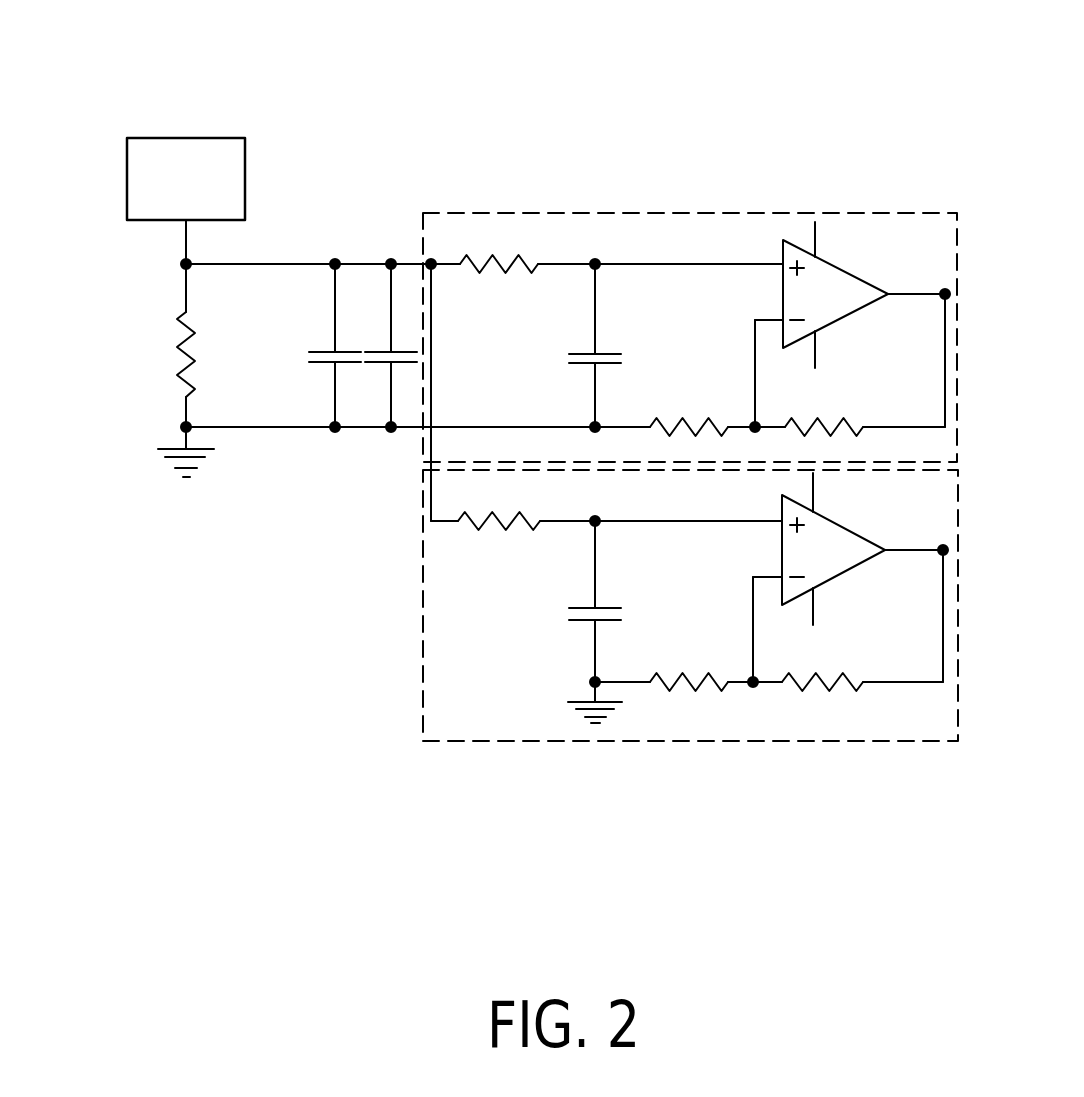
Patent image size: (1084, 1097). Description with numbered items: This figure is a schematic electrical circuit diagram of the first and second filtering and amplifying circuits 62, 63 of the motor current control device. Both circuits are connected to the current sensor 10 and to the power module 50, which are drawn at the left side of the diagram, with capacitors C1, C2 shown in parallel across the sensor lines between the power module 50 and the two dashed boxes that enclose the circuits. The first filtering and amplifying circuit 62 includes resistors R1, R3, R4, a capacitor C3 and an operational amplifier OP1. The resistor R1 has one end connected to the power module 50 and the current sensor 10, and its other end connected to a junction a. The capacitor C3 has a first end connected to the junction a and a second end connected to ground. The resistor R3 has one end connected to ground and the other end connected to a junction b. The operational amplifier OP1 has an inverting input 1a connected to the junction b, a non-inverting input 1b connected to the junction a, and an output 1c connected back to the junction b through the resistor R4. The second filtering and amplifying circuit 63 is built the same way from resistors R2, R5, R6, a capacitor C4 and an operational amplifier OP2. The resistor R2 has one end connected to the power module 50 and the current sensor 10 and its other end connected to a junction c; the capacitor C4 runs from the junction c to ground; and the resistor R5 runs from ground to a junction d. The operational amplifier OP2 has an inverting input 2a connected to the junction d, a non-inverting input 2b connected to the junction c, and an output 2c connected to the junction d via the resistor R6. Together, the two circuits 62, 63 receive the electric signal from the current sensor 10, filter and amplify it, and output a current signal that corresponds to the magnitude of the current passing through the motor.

The current sensor 10 is at (152, 384).
The power module 50 is at (188, 122).
The first filtering and amplifying circuit 62 is at (738, 226).
The second filtering and amplifying circuit 63 is at (794, 742).
The resistor R1 is at (513, 250).
The resistor R2 is at (513, 505).
The resistor R3 is at (717, 411).
The resistor R4 is at (865, 411).
The resistor R5 is at (688, 666).
The resistor R6 is at (862, 699).
The capacitor C1 is at (328, 345).
The capacitor C2 is at (386, 345).
The capacitor C3 is at (614, 345).
The capacitor C4 is at (614, 604).
The operational amplifier OP1 is at (835, 297).
The operational amplifier OP2 is at (833, 552).
The junction a is at (594, 248).
The junction b is at (759, 444).
The junction c is at (596, 504).
The junction d is at (754, 703).
The inverting input 1a is at (750, 362).
The non-inverting input 1b is at (689, 251).
The output 1c is at (919, 345).
The inverting input 2a is at (750, 619).
The non-inverting input 2b is at (688, 507).
The output 2c is at (916, 601).